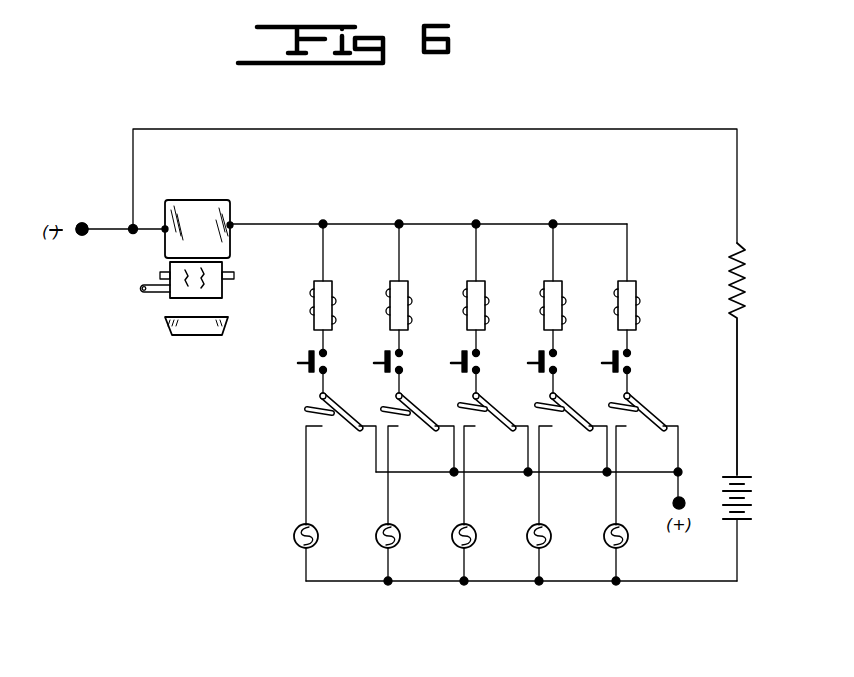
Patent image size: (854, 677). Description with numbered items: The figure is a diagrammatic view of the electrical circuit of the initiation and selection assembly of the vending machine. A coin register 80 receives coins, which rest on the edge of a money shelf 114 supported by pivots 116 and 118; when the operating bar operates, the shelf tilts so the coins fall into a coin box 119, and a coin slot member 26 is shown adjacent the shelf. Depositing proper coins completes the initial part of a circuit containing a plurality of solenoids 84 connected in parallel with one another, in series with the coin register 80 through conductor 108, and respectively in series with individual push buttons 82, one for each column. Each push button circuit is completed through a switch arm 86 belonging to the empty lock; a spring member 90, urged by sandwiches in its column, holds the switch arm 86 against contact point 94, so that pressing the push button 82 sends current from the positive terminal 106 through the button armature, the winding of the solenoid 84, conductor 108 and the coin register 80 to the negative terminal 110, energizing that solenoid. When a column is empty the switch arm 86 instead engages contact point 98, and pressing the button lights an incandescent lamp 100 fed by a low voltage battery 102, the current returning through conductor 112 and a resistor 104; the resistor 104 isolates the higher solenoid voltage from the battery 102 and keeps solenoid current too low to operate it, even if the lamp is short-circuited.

The negative terminal 110 is at (87, 216).
The conductor 112 is at (568, 129).
The conductor 108 is at (438, 223).
The coin register 80 is at (231, 205).
The money shelf 114 is at (224, 296).
The pivot 116 is at (235, 275).
The pivot 118 is at (161, 275).
The coin slot member 26 is at (146, 292).
The coin box 119 is at (204, 337).
The solenoid 84 is at (333, 302).
The push button 82 is at (299, 364).
The switch arm 86 is at (343, 404).
The spring member 90 is at (306, 412).
The contact point 94 is at (365, 425).
The contact point 98 is at (320, 427).
The incandescent lamp 100 is at (609, 547).
The resistor 104 is at (732, 308).
The positive terminal 106 is at (683, 499).
The battery 102 is at (736, 525).